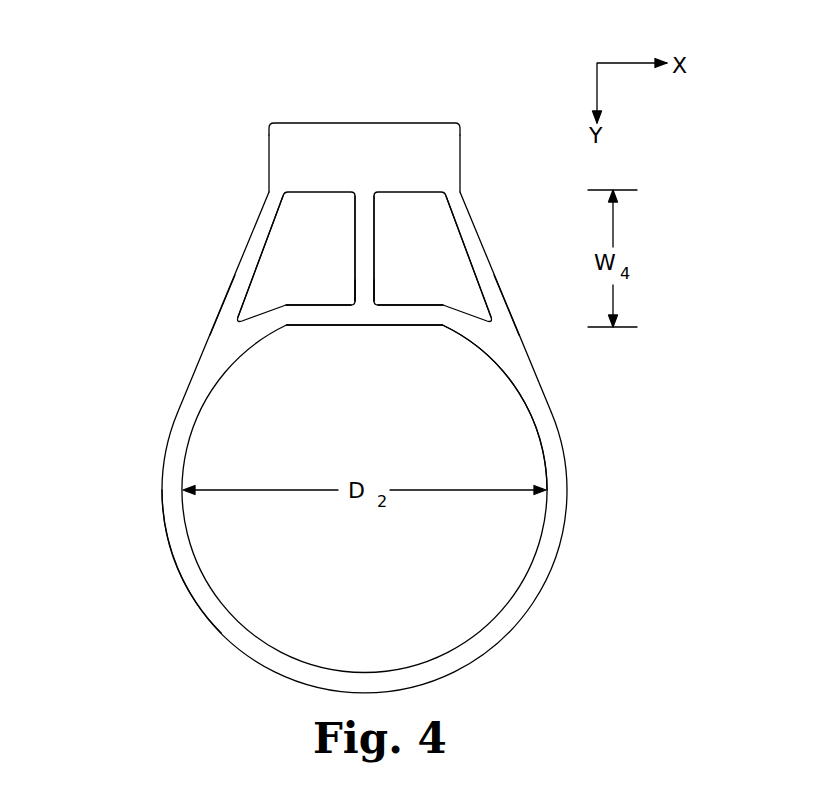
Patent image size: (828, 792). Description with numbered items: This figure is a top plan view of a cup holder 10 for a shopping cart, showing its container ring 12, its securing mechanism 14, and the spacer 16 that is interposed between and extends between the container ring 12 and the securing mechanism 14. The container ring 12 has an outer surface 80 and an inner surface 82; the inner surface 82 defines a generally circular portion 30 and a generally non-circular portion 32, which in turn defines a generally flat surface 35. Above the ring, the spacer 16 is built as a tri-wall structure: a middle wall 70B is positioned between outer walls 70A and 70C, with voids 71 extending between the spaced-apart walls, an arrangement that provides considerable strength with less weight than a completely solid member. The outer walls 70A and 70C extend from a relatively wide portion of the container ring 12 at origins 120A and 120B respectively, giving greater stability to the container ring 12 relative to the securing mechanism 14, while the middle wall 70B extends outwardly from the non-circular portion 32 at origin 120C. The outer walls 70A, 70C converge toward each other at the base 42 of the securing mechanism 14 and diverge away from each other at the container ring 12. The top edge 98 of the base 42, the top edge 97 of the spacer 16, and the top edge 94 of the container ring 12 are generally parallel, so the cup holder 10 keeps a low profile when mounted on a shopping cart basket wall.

The cup holder 10 is at (214, 82).
The container ring 12 is at (563, 542).
The securing mechanism 14 is at (430, 120).
The spacer 16 is at (508, 289).
The generally circular portion 30 is at (520, 402).
The generally non-circular portion 32 is at (365, 325).
The generally flat surface 35 is at (330, 325).
The base 42 is at (450, 153).
The outer wall 70A is at (245, 247).
The middle wall 70B is at (363, 254).
The outer wall 70C is at (482, 240).
The voids 71 is at (318, 287).
The outer surface 80 is at (465, 665).
The inner surface 82 is at (528, 568).
The top edge 94 is at (222, 622).
The top edge 97 is at (233, 293).
The top edge 98 is at (330, 156).
The origin 120A is at (225, 339).
The origin 120B is at (506, 323).
The origin 120C is at (357, 307).